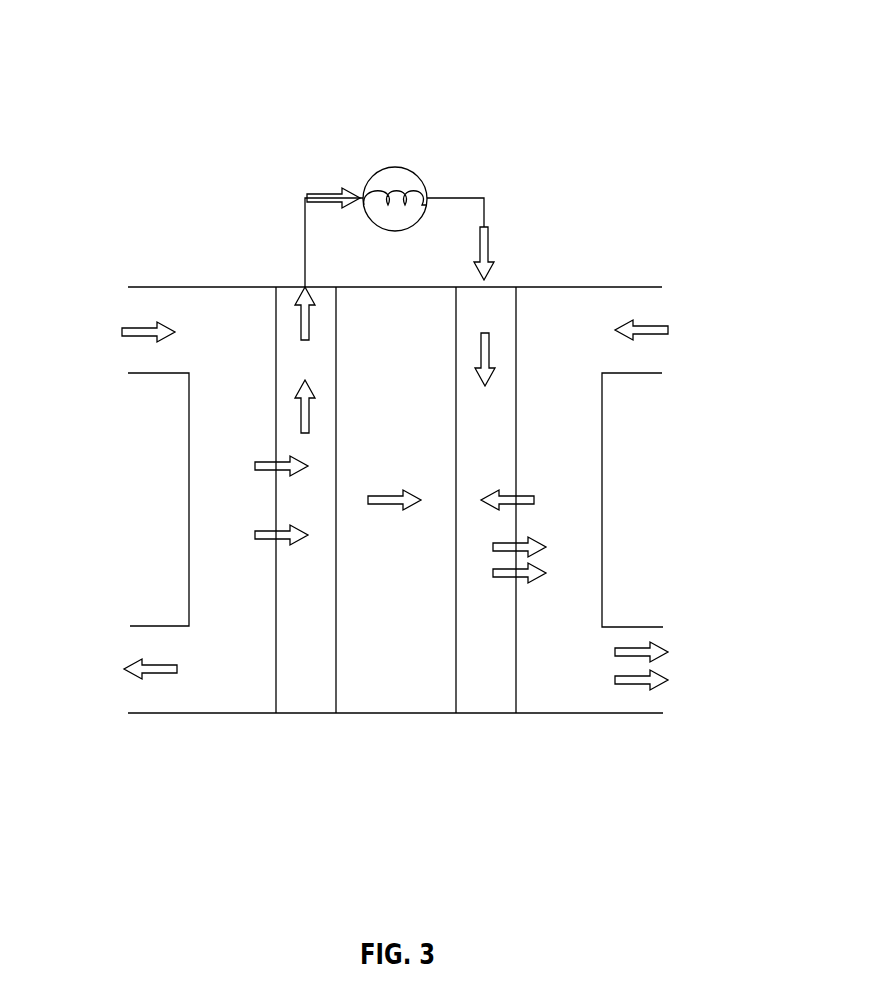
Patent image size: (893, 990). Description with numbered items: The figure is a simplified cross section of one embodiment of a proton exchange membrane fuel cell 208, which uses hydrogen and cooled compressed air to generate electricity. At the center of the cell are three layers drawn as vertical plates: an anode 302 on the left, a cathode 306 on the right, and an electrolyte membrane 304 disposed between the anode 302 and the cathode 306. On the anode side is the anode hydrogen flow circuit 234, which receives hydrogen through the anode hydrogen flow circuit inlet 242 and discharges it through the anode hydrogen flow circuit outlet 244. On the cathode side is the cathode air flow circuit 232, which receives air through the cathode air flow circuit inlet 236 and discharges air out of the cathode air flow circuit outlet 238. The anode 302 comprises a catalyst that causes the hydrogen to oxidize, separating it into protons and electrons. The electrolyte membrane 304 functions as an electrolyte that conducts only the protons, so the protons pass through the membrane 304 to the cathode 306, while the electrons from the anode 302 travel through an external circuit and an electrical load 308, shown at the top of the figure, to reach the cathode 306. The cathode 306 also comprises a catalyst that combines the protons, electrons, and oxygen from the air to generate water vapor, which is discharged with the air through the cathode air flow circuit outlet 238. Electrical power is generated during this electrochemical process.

The proton exchange membrane fuel cell 208 is at (636, 50).
The anode 302 is at (298, 713).
The electrolyte membrane 304 is at (378, 713).
The cathode 306 is at (493, 713).
The electrical load 308 is at (395, 168).
The anode hydrogen flow circuit 234 is at (203, 437).
The anode hydrogen flow circuit inlet 242 is at (140, 355).
The anode hydrogen flow circuit outlet 244 is at (140, 698).
The cathode air flow circuit 232 is at (585, 437).
The cathode air flow circuit inlet 236 is at (653, 356).
The cathode air flow circuit outlet 238 is at (655, 697).